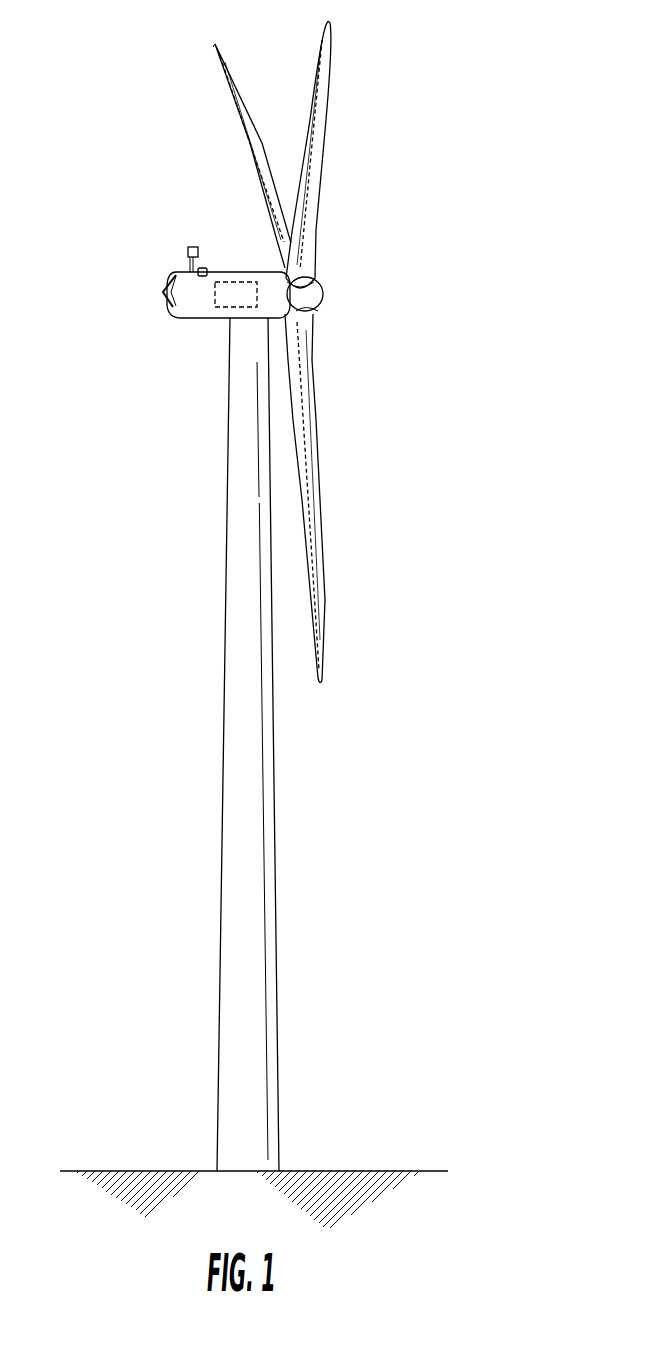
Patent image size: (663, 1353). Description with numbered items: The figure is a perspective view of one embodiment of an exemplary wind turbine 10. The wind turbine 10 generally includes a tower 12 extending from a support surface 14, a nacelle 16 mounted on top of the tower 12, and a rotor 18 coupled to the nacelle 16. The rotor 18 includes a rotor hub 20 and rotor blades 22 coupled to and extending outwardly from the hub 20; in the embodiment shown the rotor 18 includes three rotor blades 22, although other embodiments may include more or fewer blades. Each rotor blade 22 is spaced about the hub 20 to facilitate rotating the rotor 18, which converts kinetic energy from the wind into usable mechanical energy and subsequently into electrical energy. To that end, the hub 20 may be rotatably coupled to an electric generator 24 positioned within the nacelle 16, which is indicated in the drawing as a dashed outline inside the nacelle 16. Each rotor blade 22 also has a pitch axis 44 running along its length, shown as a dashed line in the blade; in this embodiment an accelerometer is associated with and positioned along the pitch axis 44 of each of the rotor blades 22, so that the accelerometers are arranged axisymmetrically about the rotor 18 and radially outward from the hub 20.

The wind turbine 10 is at (468, 74).
The tower 12 is at (225, 744).
The support surface 14 is at (254, 1173).
The nacelle 16 is at (218, 308).
The rotor 18 is at (375, 238).
The rotor hub 20 is at (324, 320).
The rotor blade 22 is at (295, 352).
The electric generator 24 is at (214, 246).
The pitch axis 44 is at (284, 355).